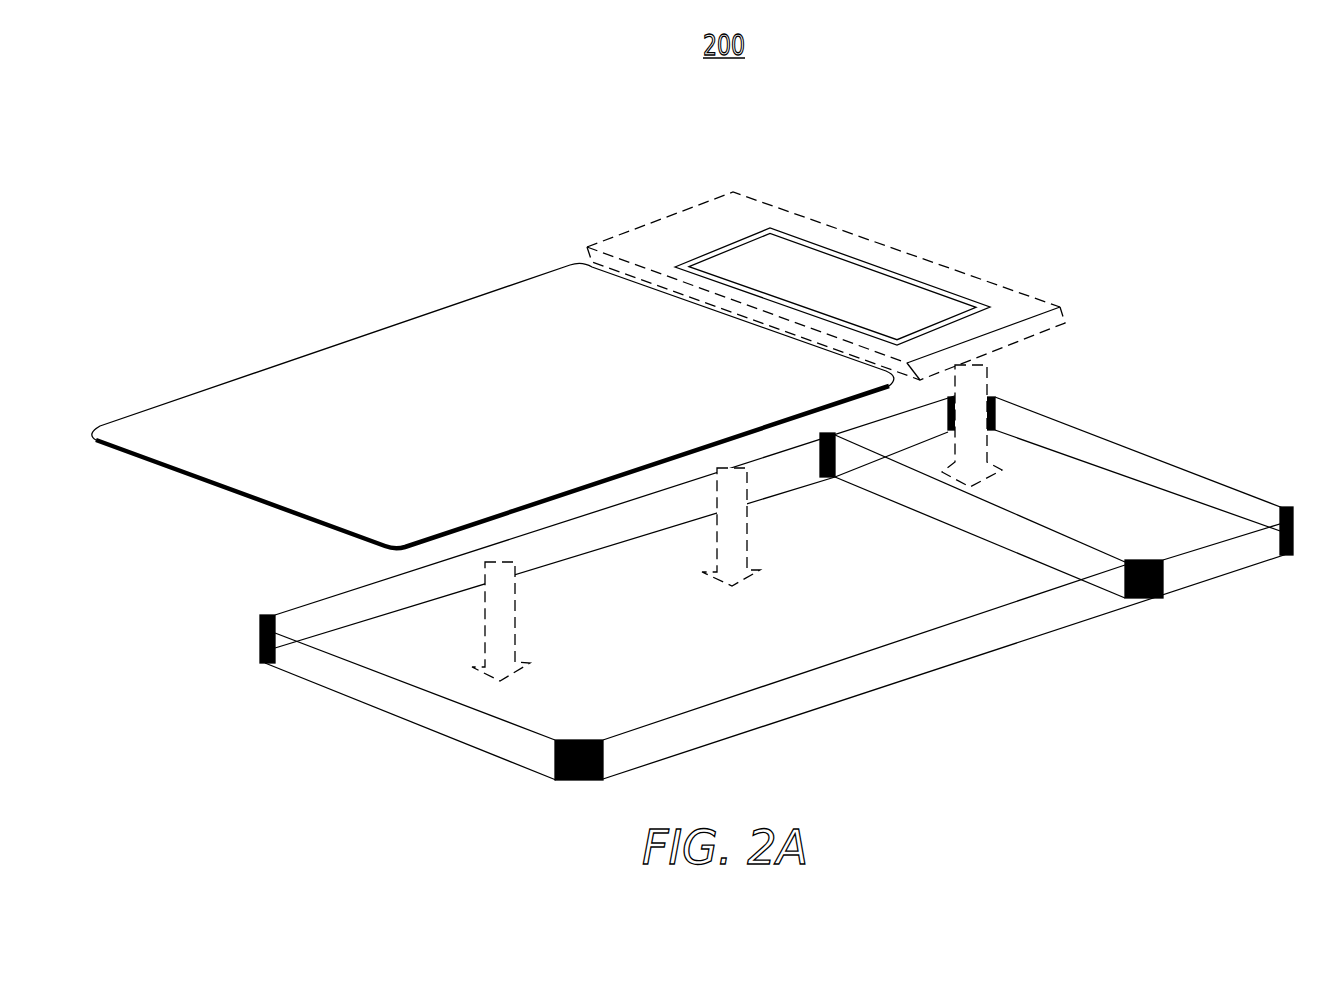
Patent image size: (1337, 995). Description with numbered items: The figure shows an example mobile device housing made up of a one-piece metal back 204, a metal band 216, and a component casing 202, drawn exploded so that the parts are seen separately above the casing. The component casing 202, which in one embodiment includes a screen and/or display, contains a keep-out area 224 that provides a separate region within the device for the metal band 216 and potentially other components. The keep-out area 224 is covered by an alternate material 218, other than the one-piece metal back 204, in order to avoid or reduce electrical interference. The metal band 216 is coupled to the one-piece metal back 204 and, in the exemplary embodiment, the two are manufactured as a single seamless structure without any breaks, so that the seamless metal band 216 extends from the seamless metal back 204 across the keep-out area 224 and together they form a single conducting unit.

The component casing 202 is at (970, 656).
The one-piece metal back 204 is at (372, 300).
The metal band 216 is at (757, 230).
The alternate material 218 is at (1020, 297).
The keep-out area 224 is at (1096, 497).